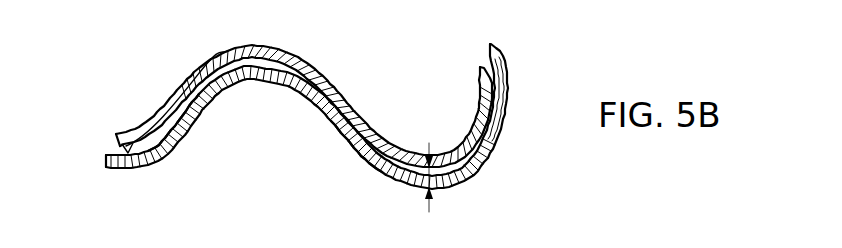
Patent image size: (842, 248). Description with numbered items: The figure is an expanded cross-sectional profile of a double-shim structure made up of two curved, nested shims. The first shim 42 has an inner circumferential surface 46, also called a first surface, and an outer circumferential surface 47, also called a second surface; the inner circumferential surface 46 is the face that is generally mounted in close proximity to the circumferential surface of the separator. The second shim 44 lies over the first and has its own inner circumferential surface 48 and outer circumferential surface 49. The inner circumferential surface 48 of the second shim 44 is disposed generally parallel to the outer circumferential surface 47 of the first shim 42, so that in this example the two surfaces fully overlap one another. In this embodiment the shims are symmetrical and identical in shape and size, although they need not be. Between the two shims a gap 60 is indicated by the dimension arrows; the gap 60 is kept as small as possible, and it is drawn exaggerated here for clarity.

The first shim 42 is at (362, 156).
The second shim 44 is at (275, 46).
The inner circumferential surface 46 is at (174, 151).
The outer circumferential surface 47 is at (172, 135).
The inner circumferential surface 48 is at (131, 142).
The outer circumferential surface 49 is at (199, 67).
The gap 60 is at (432, 176).